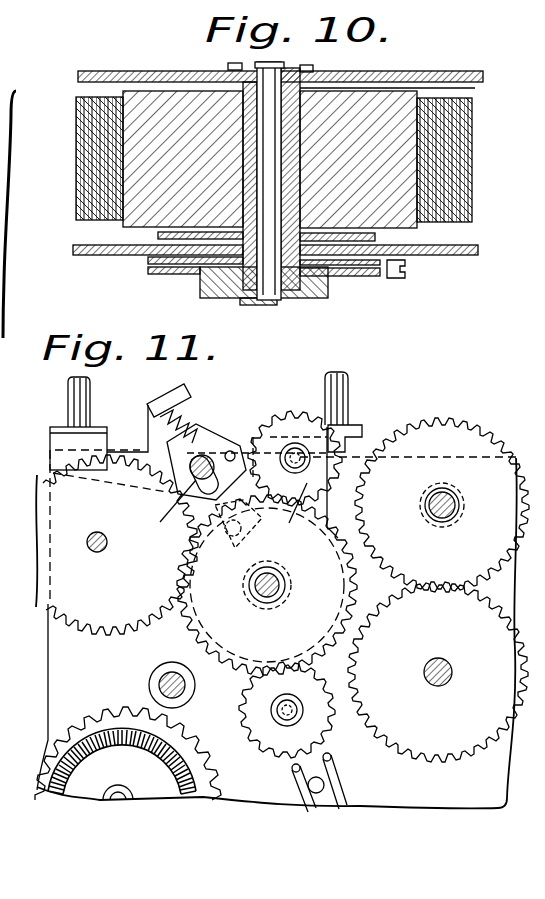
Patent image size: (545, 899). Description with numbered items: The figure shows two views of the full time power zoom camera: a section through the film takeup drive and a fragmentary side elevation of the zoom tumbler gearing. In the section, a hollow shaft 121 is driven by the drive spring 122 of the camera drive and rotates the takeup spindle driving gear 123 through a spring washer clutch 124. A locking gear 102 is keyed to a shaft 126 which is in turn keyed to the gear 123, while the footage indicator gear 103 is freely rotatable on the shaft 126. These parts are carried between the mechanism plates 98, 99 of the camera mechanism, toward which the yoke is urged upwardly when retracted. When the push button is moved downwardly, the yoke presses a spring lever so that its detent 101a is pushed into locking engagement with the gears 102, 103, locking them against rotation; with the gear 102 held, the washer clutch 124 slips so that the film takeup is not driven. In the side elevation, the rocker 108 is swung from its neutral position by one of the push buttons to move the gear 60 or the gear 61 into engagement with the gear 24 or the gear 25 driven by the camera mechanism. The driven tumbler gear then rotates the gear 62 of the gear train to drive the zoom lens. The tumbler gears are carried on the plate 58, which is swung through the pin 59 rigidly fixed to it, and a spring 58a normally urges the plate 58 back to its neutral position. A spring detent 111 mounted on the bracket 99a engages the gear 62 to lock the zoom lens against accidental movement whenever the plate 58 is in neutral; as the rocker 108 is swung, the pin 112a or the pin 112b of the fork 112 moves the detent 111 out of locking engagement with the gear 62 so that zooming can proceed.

In FIG. 10, the mechanism plate 99 is at (483, 84).
In FIG. 10, the drive spring 122 is at (77, 128).
In FIG. 10, the hollow shaft 121 is at (245, 128).
In FIG. 10, the takeup spindle driving gear 123 is at (312, 70).
In FIG. 10, the shaft 126 is at (270, 160).
In FIG. 10, the locking gear 102 is at (340, 268).
In FIG. 10, the mechanism plate 98 is at (474, 252).
In FIG. 10, the spring washer clutch 124 is at (200, 292).
In FIG. 10, the footage indicator gear 103 is at (356, 278).
In FIG. 10, the detent 101a is at (395, 278).
In FIG. 11, the bracket 99a is at (148, 405).
In FIG. 11, the rocker 108 is at (240, 445).
In FIG. 11, the plate 58 is at (262, 442).
In FIG. 11, the pin 112b is at (272, 430).
In FIG. 11, the gear 25 is at (465, 395).
In FIG. 11, the pin 112a is at (178, 497).
In FIG. 11, the fork 112 is at (181, 500).
In FIG. 11, the spring detent 111 is at (188, 503).
In FIG. 11, the gear 61 is at (300, 505).
In FIG. 11, the pin 59 is at (267, 585).
In FIG. 11, the gear 62 is at (207, 612).
In FIG. 11, the gear 60 is at (258, 710).
In FIG. 11, the spring 58a is at (300, 785).
In FIG. 11, the gear 24 is at (458, 738).